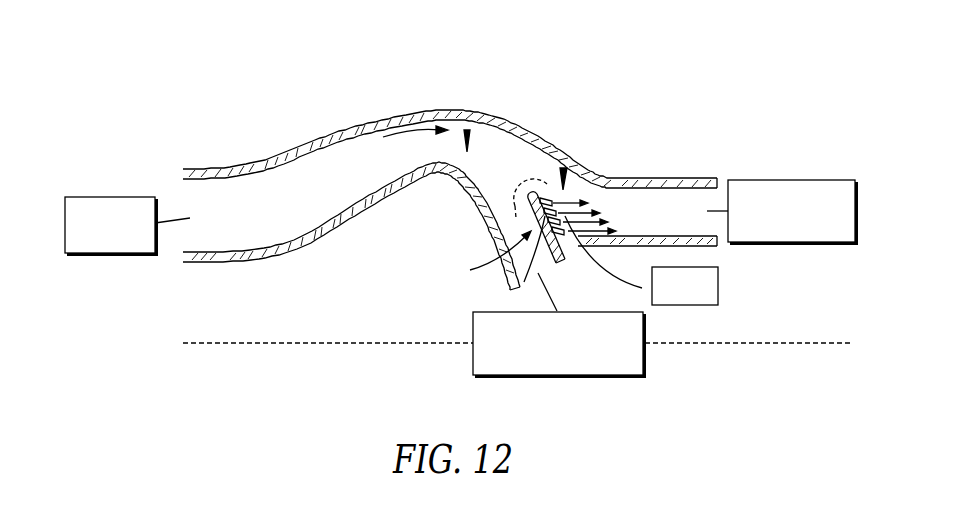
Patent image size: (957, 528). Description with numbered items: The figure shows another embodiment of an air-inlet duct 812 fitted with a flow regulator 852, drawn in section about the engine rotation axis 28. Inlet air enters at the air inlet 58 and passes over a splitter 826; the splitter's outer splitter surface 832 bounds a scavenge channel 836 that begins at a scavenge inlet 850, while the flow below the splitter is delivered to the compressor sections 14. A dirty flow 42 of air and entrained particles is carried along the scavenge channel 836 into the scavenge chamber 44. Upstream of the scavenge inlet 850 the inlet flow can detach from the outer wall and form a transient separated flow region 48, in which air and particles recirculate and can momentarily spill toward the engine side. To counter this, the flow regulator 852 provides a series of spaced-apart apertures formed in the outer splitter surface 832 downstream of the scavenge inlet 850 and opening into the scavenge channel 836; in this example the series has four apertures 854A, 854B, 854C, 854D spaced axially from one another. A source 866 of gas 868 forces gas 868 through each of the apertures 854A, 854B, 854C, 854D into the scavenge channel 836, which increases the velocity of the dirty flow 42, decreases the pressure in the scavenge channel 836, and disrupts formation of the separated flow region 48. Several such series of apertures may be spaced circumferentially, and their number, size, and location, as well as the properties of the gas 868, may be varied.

The compressor sections 14 is at (560, 377).
The engine rotation axis 28 is at (253, 345).
The dirty flow 42 is at (413, 130).
The scavenge chamber 44 is at (797, 243).
The separated flow region 48 is at (477, 113).
The air inlet 58 is at (112, 255).
The air-inlet duct 812 is at (703, 112).
The splitter 826 is at (481, 259).
The outer splitter surface 832 is at (708, 226).
The scavenge channel 836 is at (703, 200).
The scavenge inlet 850 is at (535, 168).
The flow regulator 852 is at (563, 166).
The first aperture 854A is at (556, 203).
The second aperture 854B is at (562, 206).
The third aperture 854C is at (524, 282).
The fourth aperture 854D is at (602, 226).
The source of gas 866 is at (718, 286).
The gas 868 is at (642, 288).